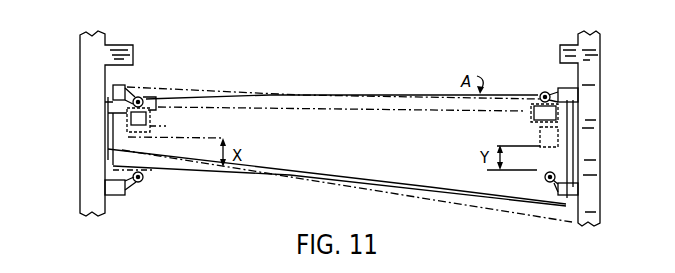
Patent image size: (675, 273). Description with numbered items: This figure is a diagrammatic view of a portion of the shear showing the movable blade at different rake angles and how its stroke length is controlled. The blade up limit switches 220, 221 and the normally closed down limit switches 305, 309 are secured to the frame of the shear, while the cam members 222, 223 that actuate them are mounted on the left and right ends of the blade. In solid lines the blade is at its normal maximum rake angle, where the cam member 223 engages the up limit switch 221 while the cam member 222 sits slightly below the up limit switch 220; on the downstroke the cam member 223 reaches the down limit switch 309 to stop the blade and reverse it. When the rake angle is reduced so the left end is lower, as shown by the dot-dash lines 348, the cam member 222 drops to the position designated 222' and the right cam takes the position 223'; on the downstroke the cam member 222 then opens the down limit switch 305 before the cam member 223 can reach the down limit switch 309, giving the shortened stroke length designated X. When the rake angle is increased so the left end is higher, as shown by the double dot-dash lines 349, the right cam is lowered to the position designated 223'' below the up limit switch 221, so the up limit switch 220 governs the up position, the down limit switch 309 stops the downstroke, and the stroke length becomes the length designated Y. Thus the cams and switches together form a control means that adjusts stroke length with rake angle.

The up limit switch 220 is at (108, 94).
The up limit switch 221 is at (563, 91).
The cam member 222 is at (89, 122).
The cam member in lowered position 222' is at (178, 123).
The cam member 223 is at (585, 112).
The cam member position 223' is at (484, 124).
The cam member in lowered position 223'' is at (593, 138).
The down limit switch 305 is at (117, 195).
The down limit switch 309 is at (570, 196).
The dot-dash line blade position 348 is at (268, 178).
The double dot-dash line blade position 349 is at (444, 203).